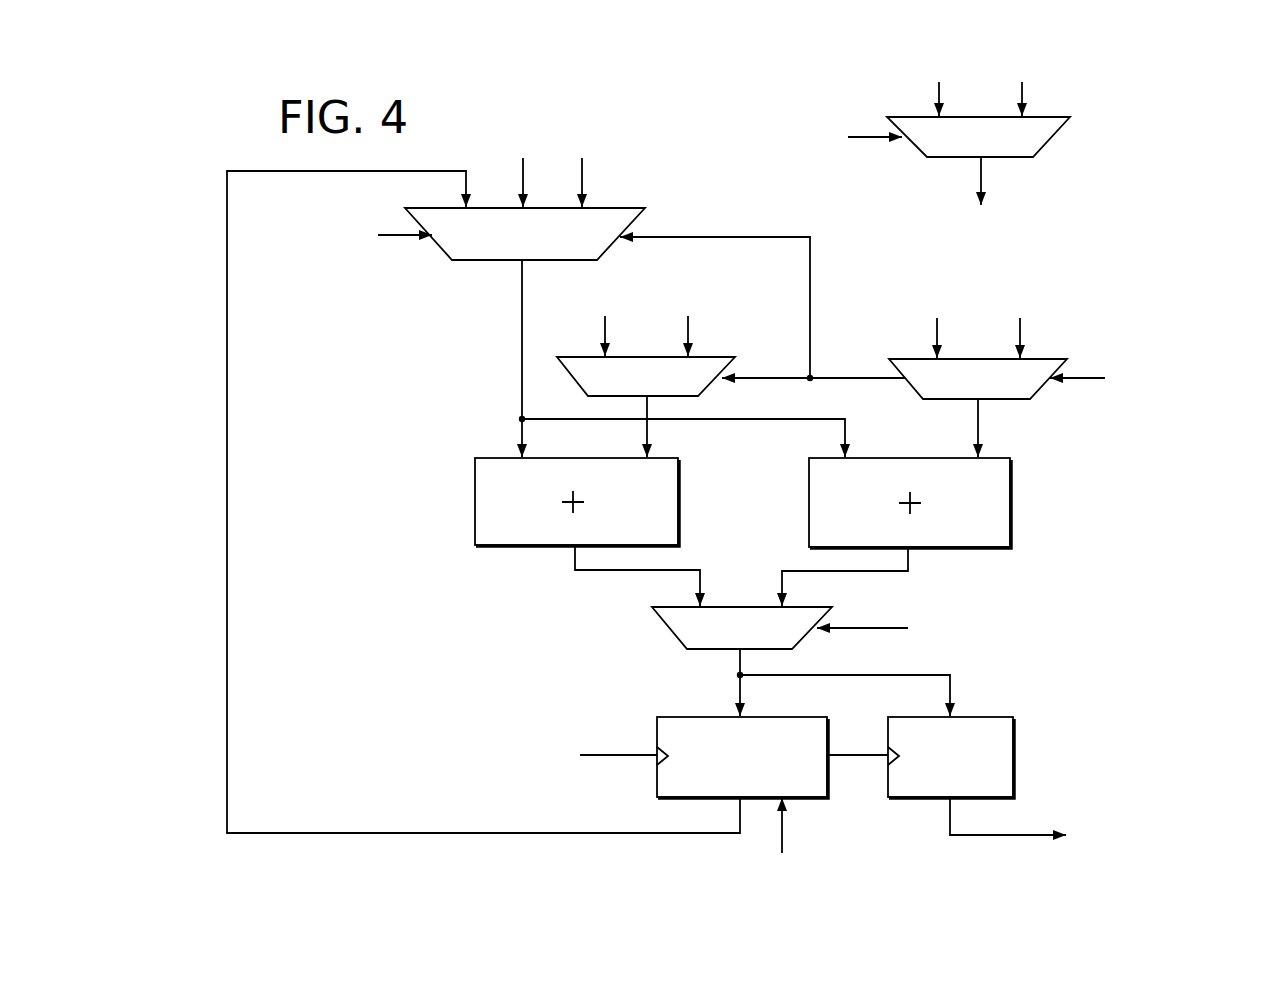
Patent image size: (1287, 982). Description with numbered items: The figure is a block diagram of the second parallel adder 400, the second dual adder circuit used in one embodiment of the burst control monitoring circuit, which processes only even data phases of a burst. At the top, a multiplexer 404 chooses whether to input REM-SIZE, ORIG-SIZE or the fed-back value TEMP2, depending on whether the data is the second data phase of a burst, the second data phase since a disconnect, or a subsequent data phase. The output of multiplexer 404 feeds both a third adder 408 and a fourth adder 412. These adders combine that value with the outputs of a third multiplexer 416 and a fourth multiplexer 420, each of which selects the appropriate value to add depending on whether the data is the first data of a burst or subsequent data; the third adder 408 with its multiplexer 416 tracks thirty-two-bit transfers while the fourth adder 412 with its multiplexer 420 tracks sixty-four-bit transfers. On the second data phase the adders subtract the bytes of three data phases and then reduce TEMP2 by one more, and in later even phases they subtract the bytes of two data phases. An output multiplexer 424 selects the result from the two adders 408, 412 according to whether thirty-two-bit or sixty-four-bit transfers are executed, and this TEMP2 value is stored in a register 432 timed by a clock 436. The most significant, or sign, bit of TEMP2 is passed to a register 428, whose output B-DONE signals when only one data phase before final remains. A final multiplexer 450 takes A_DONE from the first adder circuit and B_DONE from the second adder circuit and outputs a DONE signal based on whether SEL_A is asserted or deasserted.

The second parallel adder 400 is at (1168, 243).
The multiplexer 404 is at (640, 208).
The third adder 408 is at (668, 453).
The fourth adder 412 is at (1000, 458).
The third multiplexer 416 is at (712, 357).
The fourth multiplexer 420 is at (1050, 359).
The output multiplexer 424 is at (815, 606).
The register 428 is at (1000, 717).
The register 432 is at (775, 717).
The clock 436 is at (613, 750).
The final multiplexer 450 is at (1050, 117).